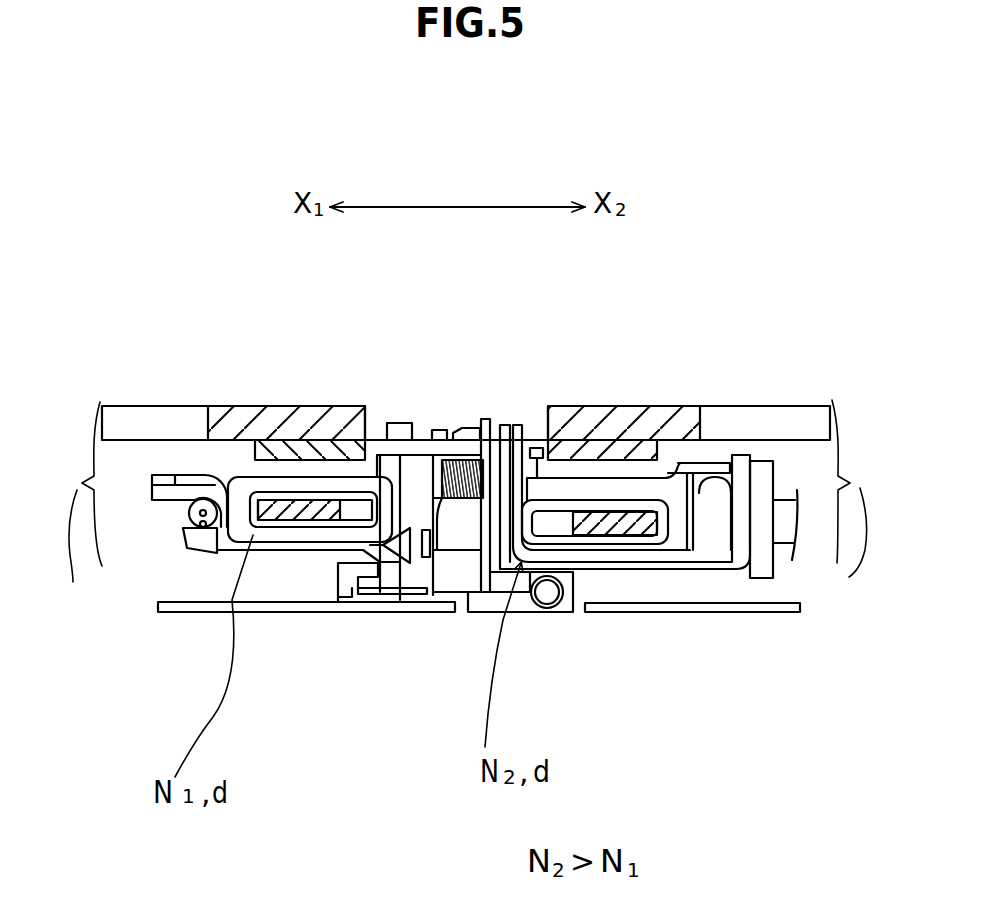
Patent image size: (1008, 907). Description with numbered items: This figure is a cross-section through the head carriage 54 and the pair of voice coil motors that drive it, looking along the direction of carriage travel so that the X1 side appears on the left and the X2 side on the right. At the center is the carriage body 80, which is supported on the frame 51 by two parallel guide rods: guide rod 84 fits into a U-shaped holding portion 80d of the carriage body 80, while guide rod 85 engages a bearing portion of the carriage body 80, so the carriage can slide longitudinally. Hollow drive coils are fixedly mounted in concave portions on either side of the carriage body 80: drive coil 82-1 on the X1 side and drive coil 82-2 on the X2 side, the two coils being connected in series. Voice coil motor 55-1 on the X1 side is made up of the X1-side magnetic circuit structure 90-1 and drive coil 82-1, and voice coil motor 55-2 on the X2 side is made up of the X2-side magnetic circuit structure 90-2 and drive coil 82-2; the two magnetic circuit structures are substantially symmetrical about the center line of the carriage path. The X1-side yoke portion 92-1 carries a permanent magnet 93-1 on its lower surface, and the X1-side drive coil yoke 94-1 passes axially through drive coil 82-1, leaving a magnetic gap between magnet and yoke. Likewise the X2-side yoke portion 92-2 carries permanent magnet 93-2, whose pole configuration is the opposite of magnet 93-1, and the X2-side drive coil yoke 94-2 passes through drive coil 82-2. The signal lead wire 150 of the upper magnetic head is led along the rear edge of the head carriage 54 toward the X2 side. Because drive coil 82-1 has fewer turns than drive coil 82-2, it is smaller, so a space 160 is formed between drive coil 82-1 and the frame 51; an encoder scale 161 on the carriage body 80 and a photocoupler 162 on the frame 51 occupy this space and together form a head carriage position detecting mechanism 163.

The frame 51 is at (793, 613).
The head carriage 54 is at (453, 407).
The voice coil motor 55-1 is at (81, 517).
The voice coil motor 55-2 is at (849, 511).
The carriage body 80 is at (553, 595).
The U-shaped holding portion 80d is at (213, 553).
The drive coil 82-1 is at (335, 580).
The drive coil 82-2 is at (660, 553).
The guide rod 84 is at (190, 516).
The guide rod 85 is at (547, 597).
The X1-side magnetic circuit structure 90-1 is at (250, 398).
The X2-side magnetic circuit structure 90-2 is at (650, 398).
The X1-side yoke portion 92-1 is at (215, 407).
The X2-side yoke portion 92-2 is at (690, 407).
The permanent magnet 93-1 is at (313, 445).
The permanent magnet 93-2 is at (588, 445).
The X1-side drive coil yoke 94-1 is at (297, 517).
The X2-side drive coil yoke 94-2 is at (620, 527).
The signal lead wire 150 is at (645, 567).
The space 160 is at (295, 582).
The encoder scale 161 is at (400, 597).
The photocoupler 162 is at (358, 592).
The head carriage position detecting mechanism 163 is at (405, 597).